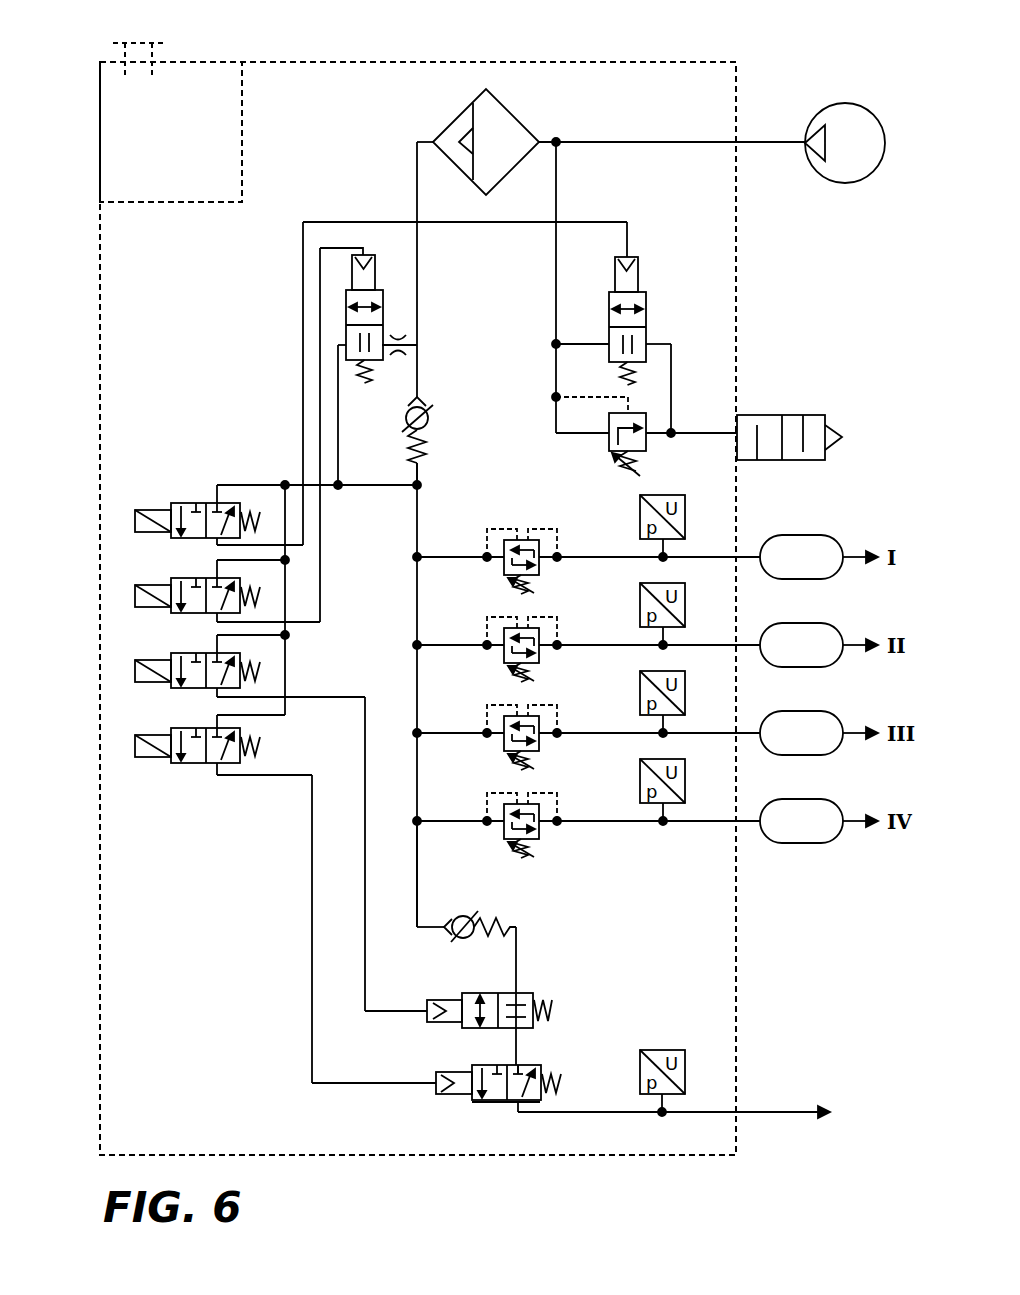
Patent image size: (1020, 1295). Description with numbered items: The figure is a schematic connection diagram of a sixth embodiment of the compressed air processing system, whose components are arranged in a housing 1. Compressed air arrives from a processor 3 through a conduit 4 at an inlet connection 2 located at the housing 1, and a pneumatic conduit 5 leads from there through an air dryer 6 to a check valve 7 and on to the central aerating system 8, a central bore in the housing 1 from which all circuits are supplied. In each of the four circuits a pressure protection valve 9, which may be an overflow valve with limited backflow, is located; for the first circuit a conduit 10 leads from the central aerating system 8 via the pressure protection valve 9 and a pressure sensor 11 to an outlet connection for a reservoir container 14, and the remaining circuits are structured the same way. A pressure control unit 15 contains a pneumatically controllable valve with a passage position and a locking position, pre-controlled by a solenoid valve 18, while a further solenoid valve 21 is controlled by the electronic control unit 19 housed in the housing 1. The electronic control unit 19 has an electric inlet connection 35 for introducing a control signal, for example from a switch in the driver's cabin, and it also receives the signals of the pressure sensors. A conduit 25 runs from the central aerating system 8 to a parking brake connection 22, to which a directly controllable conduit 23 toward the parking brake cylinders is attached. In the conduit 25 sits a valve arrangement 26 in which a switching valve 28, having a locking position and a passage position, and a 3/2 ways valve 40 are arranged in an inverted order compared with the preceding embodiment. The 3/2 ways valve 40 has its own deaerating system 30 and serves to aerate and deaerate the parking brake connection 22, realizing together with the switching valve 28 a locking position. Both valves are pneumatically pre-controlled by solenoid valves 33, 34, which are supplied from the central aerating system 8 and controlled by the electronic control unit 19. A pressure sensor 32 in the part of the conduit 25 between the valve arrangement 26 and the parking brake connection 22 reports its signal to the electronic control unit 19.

The housing 1 is at (372, 58).
The inlet connection 2 is at (737, 142).
The processor 3 is at (845, 118).
The conduit 4 is at (778, 142).
The pneumatic conduit 5 is at (600, 142).
The air dryer 6 is at (513, 112).
The check valve 7 is at (430, 406).
The central aerating system 8 is at (421, 463).
The pressure protection valve 9 is at (521, 532).
The conduit 10 is at (561, 557).
The pressure sensor 11 is at (684, 497).
The reservoir container 14 is at (809, 545).
The pressure control unit 15 is at (654, 320).
The solenoid valve 18 is at (133, 513).
The electronic control unit 19 is at (140, 152).
The solenoid valve 21 is at (133, 589).
The parking brake connection 22 is at (749, 1113).
The conduit 23 is at (797, 1098).
The conduit 25 is at (421, 863).
The valve arrangement 26 is at (466, 1107).
The switching valve 28 is at (447, 1037).
The deaerating system 30 is at (529, 1067).
The pressure sensor 32 is at (688, 1082).
The solenoid valve 33 is at (133, 666).
The solenoid valve 34 is at (133, 742).
The electric inlet connection 35 is at (138, 43).
The 3/2 ways valve 40 is at (500, 1106).